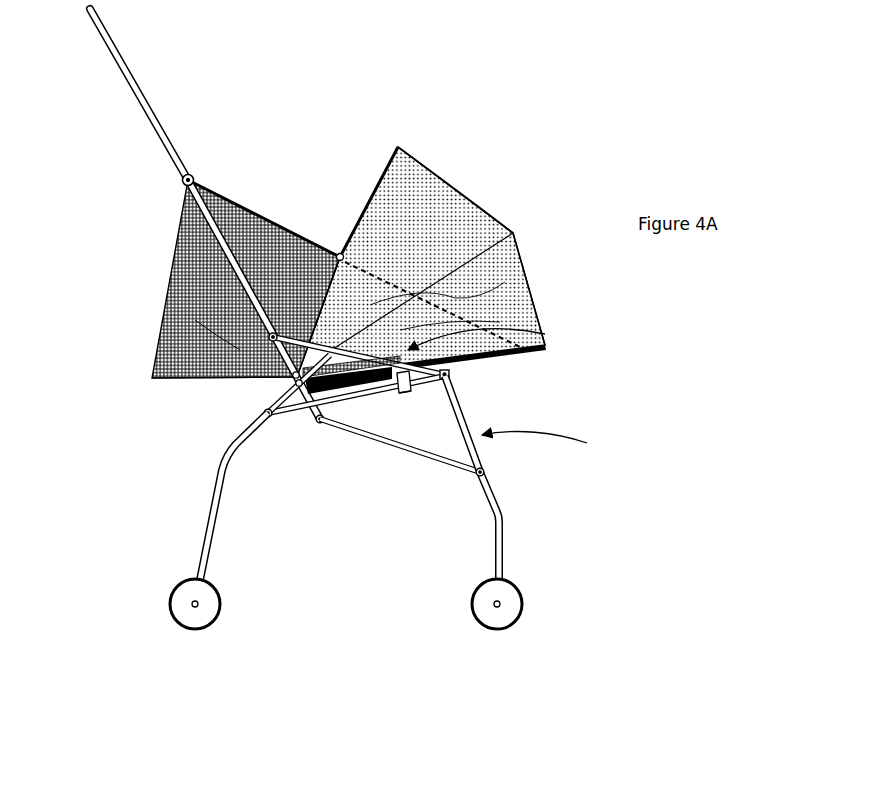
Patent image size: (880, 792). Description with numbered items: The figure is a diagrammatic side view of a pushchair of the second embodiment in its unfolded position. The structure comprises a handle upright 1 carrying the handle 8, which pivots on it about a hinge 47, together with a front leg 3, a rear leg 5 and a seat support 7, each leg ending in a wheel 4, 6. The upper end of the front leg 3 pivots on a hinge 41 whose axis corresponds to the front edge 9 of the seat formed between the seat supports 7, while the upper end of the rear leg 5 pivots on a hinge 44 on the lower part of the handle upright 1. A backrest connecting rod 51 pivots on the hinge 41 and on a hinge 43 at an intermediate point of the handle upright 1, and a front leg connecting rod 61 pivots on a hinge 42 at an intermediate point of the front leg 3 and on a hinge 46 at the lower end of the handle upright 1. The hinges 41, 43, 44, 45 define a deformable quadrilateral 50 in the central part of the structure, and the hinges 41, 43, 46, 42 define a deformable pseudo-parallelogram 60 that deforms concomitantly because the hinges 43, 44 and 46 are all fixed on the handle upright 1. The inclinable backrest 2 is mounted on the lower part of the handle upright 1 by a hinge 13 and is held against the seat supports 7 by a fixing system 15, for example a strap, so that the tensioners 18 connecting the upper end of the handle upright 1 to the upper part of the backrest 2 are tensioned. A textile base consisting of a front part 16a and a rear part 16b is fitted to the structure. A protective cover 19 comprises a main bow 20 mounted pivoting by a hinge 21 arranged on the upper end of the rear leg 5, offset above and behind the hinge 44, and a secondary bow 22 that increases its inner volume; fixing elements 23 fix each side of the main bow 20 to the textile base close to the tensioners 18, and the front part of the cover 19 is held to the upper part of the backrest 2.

The handle upright 1 is at (190, 226).
The inclinable backrest 2 is at (497, 362).
The front leg 3 is at (490, 507).
The rear wheel 4 is at (517, 582).
The rear leg 5 is at (213, 482).
The front wheel 6 is at (170, 582).
The seat support 7 is at (373, 400).
The handle 8 is at (142, 80).
The front edge of the seat 9 is at (450, 375).
The hinge 13 is at (290, 413).
The fixing system 15 is at (406, 396).
The front part of the textile base 16a is at (297, 232).
The rear part of the textile base 16b is at (178, 252).
The tensioner 18 is at (253, 205).
The protective cover 19 is at (433, 180).
The main bow 20 is at (385, 172).
The hinge 21 is at (158, 352).
The secondary bow 22 is at (514, 246).
The fixing element 23 is at (340, 250).
The hinge 41 is at (458, 385).
The hinge 42 is at (484, 473).
The hinge 43 is at (178, 293).
The hinge 44 is at (292, 382).
The hinge 45 is at (262, 413).
The hinge 46 is at (317, 428).
The hinge 47 is at (182, 179).
The deformable quadrilateral 50 is at (545, 334).
The backrest connecting rod 51 is at (520, 320).
The deformable pseudo-parallelogram 60 is at (548, 444).
The front leg connecting rod 61 is at (385, 447).